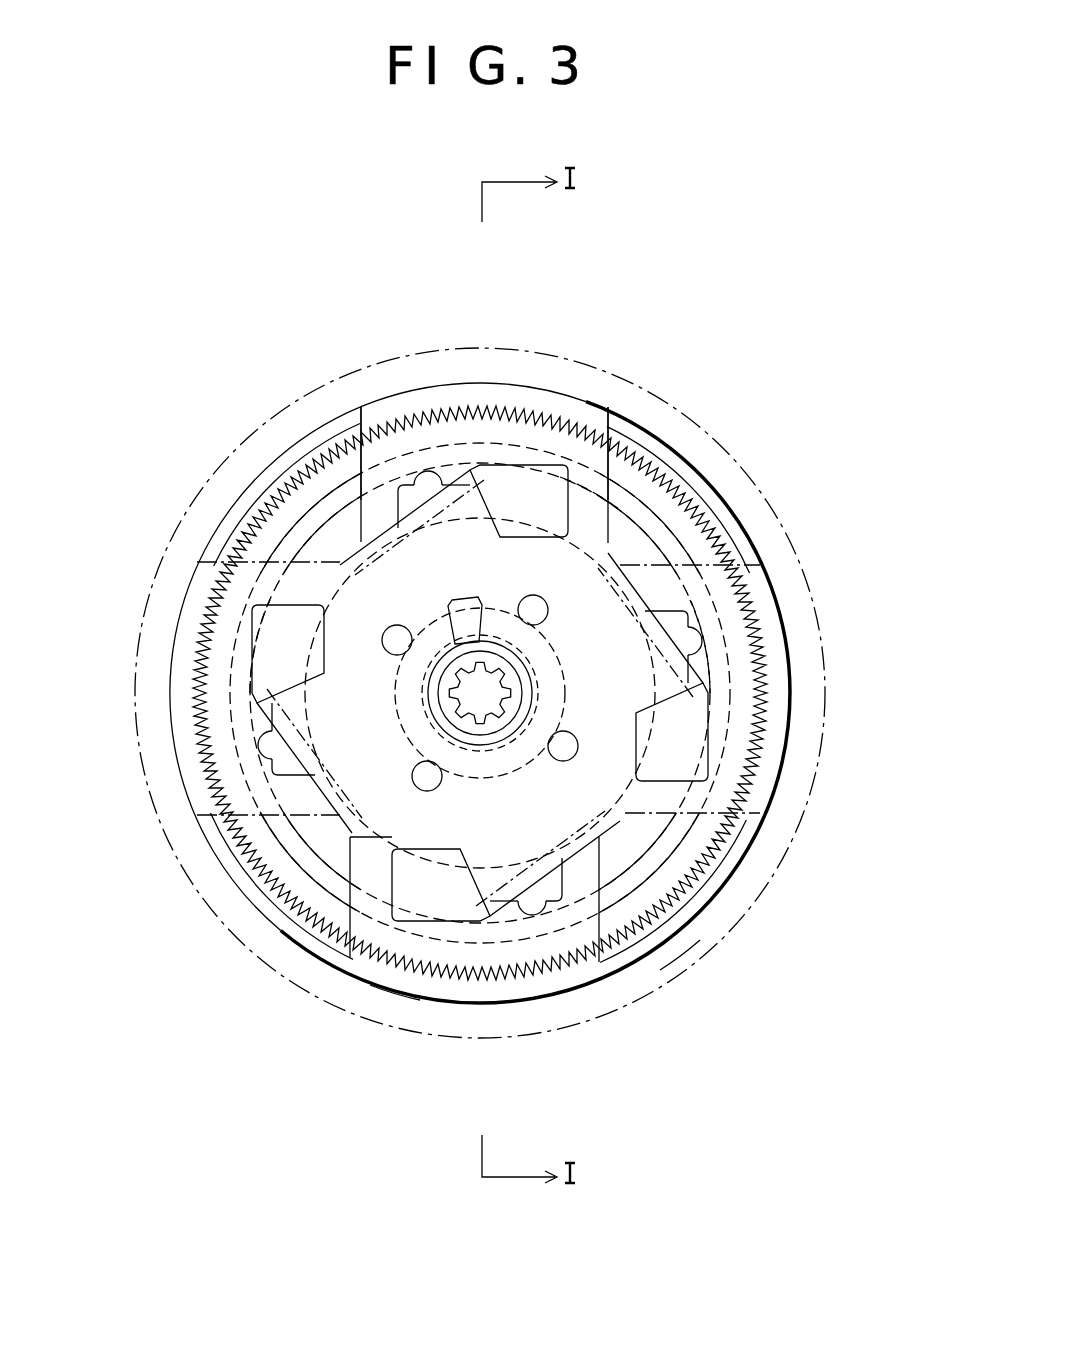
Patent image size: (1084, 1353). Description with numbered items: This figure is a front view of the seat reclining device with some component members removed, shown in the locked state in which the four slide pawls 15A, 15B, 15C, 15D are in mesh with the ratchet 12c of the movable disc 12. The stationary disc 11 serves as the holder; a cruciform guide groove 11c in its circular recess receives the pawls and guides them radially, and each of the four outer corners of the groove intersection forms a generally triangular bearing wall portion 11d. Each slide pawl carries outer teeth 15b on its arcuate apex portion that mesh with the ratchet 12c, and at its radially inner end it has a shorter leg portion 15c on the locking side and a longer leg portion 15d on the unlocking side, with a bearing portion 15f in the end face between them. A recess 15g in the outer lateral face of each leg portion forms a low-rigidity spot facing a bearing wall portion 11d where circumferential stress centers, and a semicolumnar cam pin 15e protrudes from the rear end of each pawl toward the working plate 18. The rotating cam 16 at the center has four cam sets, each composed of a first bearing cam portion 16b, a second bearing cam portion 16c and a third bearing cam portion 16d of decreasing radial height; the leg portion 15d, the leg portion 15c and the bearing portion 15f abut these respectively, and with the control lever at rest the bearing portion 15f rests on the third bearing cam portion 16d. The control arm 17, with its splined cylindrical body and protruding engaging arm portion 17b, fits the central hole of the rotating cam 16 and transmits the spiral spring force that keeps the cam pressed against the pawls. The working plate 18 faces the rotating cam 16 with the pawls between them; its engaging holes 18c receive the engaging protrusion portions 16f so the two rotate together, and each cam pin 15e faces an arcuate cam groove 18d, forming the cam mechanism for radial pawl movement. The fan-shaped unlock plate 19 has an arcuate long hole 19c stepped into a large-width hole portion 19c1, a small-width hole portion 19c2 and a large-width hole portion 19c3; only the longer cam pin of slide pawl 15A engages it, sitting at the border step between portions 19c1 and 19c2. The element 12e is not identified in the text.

The stationary disc 11 is at (272, 968).
The guide groove 11c is at (352, 905).
The bearing wall portion 11d is at (712, 845).
The movable disc 12 is at (625, 982).
The ratchet 12c is at (250, 862).
The cover outer periphery 12e is at (765, 700).
The slide pawl 15A is at (366, 465).
The slide pawl 15B is at (272, 548).
The slide pawl 15C is at (350, 935).
The slide pawl 15D is at (655, 857).
The outer teeth 15b is at (525, 420).
The leg portion 15c is at (352, 458).
The leg portion 15d is at (625, 470).
The cam pin 15e is at (432, 478).
The bearing portion 15f is at (482, 528).
The recess 15g is at (400, 528).
The rotating cam 16 is at (618, 712).
The first bearing cam portion 16b is at (716, 425).
The second bearing cam portion 16c is at (316, 426).
The third bearing cam portion 16d is at (480, 693).
The engaging protrusion portion 16f is at (480, 693).
The control arm 17 is at (480, 745).
The engaging arm portion 17b is at (490, 572).
The working plate 18 is at (660, 520).
The engaging hole 18c is at (420, 768).
The cam groove 18d is at (388, 632).
The unlock plate 19 is at (445, 824).
The long hole 19c is at (243, 555).
The large-width hole portion 19c1 is at (277, 647).
The small-width hole portion 19c2 is at (580, 440).
The large-width hole portion 19c3 is at (778, 640).